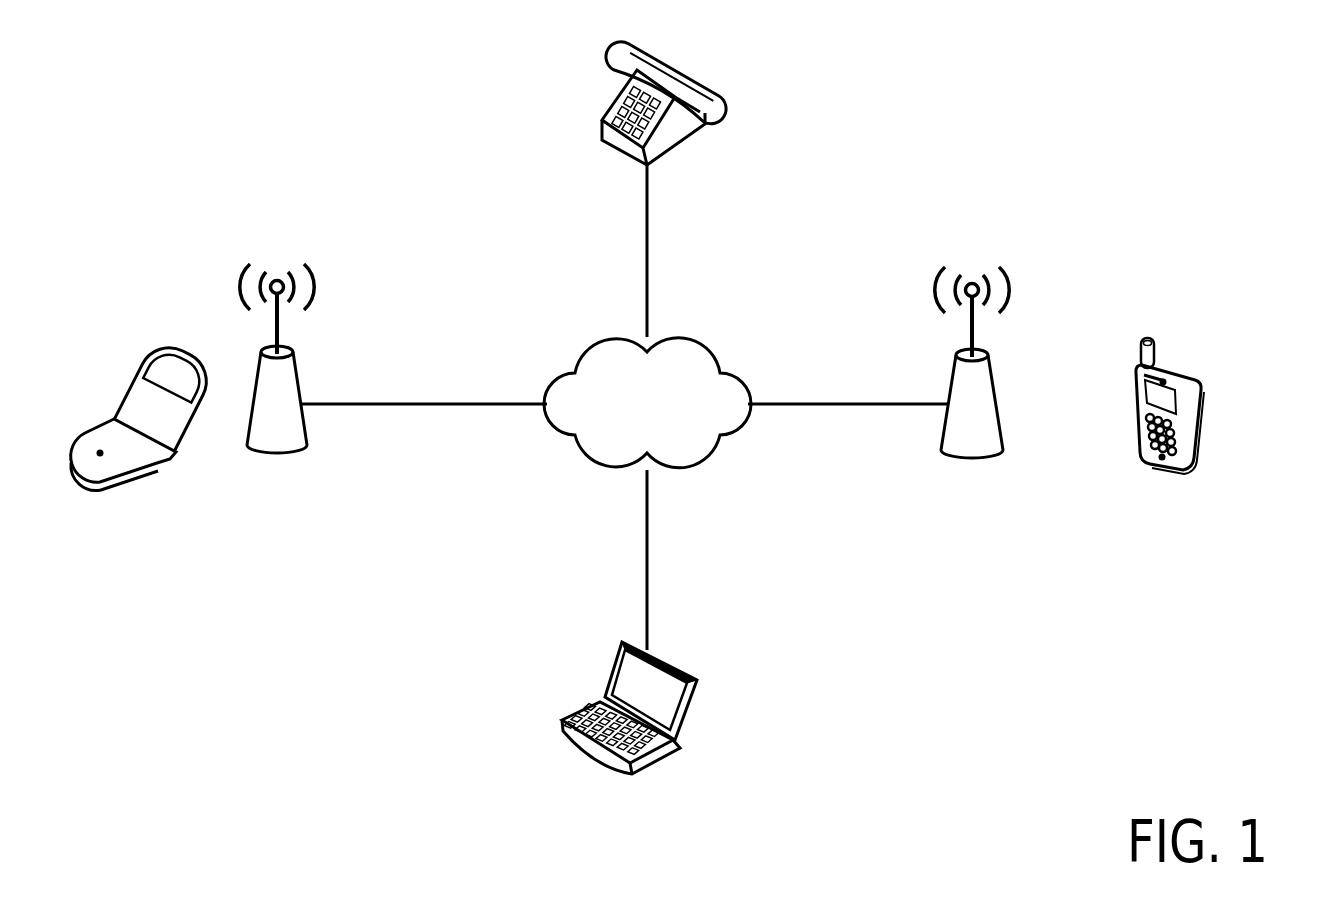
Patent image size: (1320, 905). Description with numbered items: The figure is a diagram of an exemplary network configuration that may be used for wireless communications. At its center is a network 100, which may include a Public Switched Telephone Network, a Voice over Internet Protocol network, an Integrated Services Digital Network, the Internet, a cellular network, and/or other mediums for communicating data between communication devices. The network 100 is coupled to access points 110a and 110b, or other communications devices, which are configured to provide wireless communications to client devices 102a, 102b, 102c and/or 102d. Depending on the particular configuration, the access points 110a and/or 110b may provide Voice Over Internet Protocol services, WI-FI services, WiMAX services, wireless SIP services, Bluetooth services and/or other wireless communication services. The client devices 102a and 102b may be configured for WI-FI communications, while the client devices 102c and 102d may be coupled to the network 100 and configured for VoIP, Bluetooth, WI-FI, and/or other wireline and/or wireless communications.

The network 100 is at (720, 370).
The client device 102a is at (177, 350).
The client device 102b is at (690, 677).
The client device 102c is at (1187, 370).
The client device 102d is at (730, 107).
The access point 110a is at (297, 367).
The access point 110b is at (951, 378).